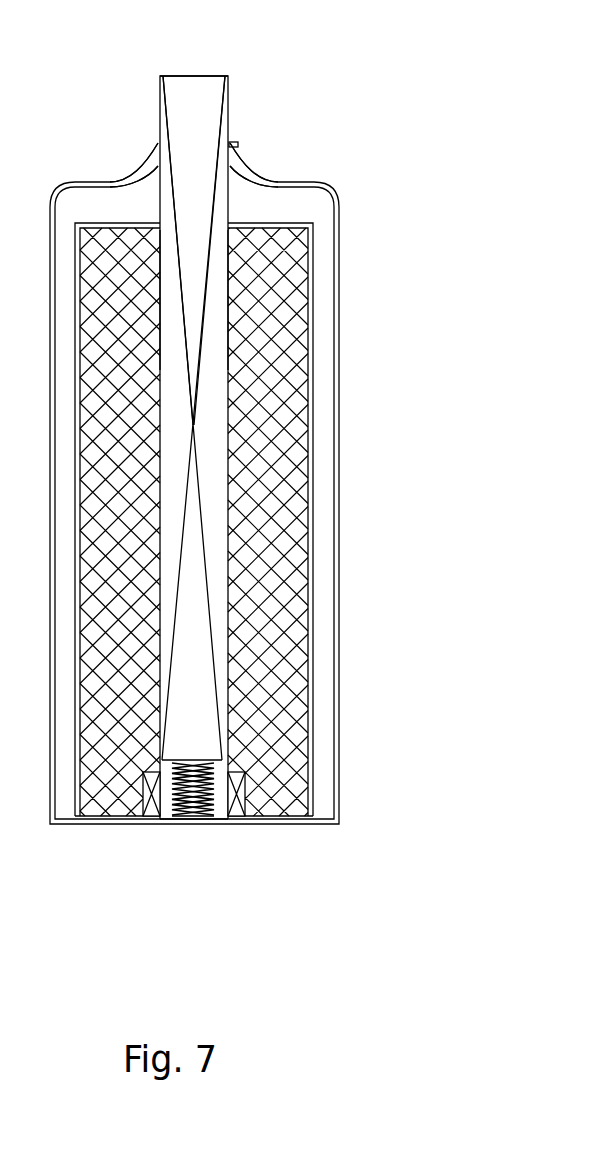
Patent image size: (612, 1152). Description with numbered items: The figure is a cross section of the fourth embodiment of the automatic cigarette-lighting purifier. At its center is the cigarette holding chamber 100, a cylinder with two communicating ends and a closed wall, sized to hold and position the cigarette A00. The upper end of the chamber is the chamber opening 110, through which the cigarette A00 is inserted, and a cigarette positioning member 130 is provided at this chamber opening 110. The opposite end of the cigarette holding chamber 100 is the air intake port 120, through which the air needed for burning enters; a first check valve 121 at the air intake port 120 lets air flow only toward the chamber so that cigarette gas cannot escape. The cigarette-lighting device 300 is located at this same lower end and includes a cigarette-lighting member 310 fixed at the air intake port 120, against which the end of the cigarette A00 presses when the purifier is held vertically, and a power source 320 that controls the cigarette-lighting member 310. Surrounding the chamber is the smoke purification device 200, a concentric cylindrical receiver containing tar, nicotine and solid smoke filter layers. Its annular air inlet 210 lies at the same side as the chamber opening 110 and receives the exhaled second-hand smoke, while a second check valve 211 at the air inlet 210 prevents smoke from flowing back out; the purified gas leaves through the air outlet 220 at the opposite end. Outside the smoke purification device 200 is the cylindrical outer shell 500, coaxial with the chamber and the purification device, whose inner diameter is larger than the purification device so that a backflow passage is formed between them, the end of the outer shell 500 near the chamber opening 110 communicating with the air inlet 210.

The cigarette holding chamber 100 is at (195, 625).
The chamber opening 110 is at (158, 145).
The air intake port 120 is at (183, 825).
The first check valve 121 is at (213, 823).
The cigarette positioning member 130 is at (202, 145).
The smoke purification device 200 is at (285, 465).
The air inlet 210 is at (243, 145).
The second check valve 211 is at (244, 167).
The air outlet 220 is at (283, 816).
The cigarette-lighting device 300 is at (315, 748).
The cigarette-lighting member 310 is at (208, 768).
The power source 320 is at (237, 805).
The outer shell 500 is at (338, 482).
The cigarette A00 is at (210, 300).